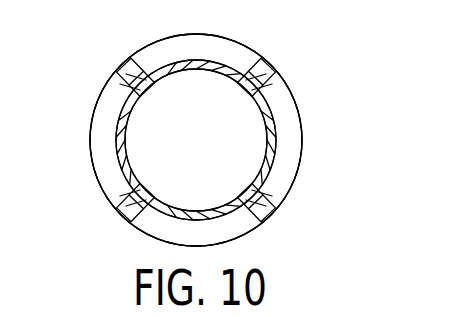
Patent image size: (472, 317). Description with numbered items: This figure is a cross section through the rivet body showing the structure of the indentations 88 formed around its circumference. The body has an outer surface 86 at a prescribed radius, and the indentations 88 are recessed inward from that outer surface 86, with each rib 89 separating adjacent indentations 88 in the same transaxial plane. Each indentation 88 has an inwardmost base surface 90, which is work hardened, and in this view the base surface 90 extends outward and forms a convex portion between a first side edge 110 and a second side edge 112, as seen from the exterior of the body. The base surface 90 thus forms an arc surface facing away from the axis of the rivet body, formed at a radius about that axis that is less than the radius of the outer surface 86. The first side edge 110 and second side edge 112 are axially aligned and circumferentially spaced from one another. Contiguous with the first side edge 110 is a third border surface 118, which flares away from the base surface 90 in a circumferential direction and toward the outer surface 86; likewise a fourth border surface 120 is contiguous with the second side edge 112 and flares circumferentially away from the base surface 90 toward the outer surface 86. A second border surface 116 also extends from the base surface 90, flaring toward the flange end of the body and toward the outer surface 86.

The outer surface 86 is at (303, 133).
The indentation 88 is at (257, 36).
The rib 89 is at (262, 65).
The base surface 90 is at (199, 58).
The first side edge 110 is at (95, 115).
The second side edge 112 is at (122, 190).
The second border surface 116 is at (97, 142).
The third border surface 118 is at (118, 84).
The fourth border surface 120 is at (118, 203).